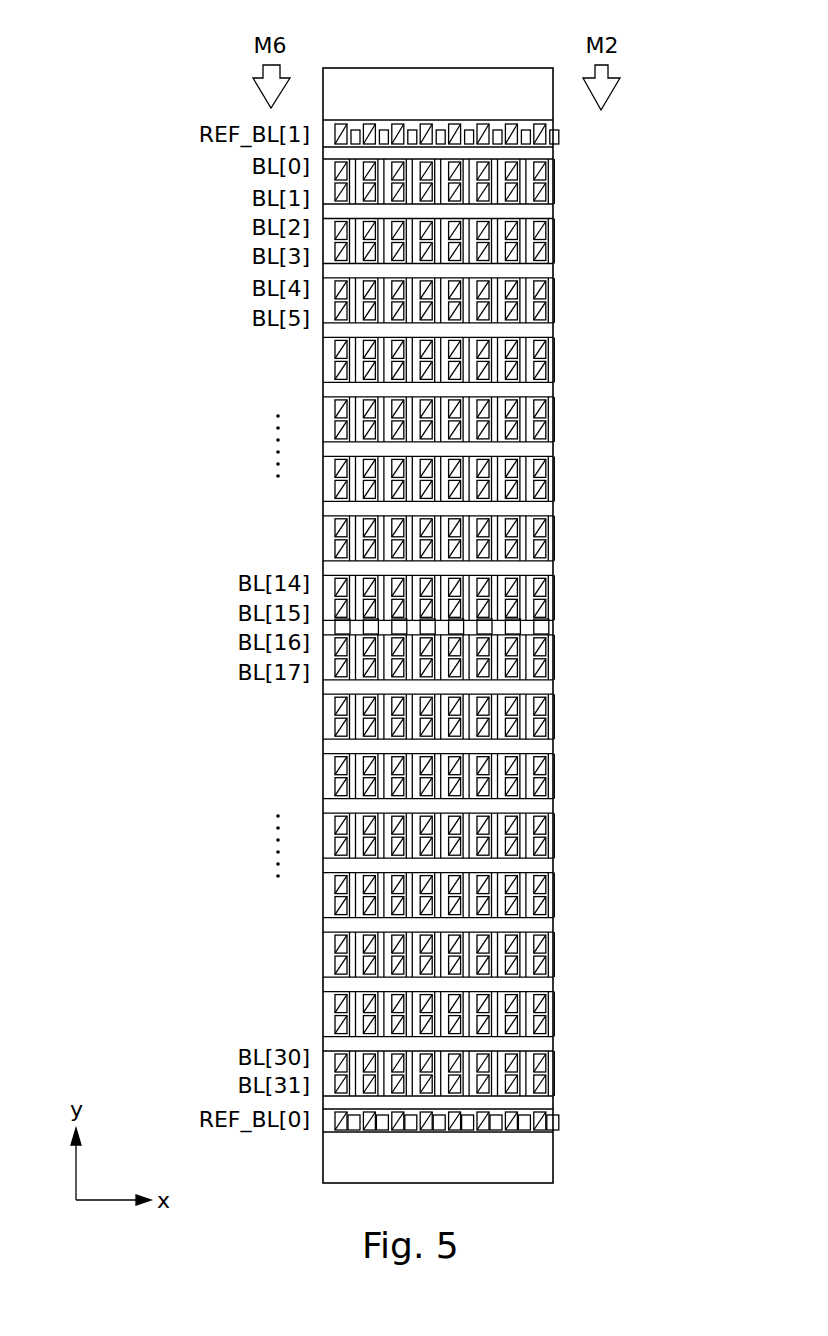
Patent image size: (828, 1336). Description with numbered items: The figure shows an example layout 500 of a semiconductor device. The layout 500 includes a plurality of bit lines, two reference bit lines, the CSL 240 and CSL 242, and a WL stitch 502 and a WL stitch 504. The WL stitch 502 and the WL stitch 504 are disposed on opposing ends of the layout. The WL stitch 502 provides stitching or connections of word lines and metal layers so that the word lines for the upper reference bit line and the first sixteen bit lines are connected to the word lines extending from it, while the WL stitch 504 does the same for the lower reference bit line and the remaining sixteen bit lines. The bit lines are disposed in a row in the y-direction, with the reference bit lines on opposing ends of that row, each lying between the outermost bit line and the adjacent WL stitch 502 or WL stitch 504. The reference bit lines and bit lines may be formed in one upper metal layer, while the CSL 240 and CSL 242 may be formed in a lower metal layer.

The example layout 500 is at (164, 25).
The WL stitch 502 is at (438, 101).
The WL stitch 504 is at (438, 1151).
The CSL 242 is at (496, 358).
The CSL 240 is at (496, 894).